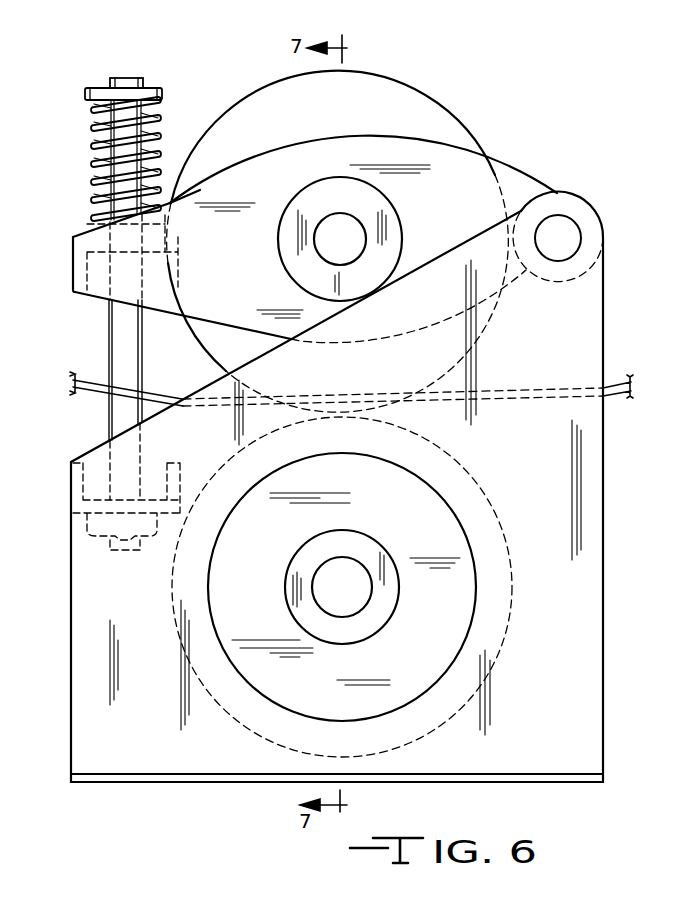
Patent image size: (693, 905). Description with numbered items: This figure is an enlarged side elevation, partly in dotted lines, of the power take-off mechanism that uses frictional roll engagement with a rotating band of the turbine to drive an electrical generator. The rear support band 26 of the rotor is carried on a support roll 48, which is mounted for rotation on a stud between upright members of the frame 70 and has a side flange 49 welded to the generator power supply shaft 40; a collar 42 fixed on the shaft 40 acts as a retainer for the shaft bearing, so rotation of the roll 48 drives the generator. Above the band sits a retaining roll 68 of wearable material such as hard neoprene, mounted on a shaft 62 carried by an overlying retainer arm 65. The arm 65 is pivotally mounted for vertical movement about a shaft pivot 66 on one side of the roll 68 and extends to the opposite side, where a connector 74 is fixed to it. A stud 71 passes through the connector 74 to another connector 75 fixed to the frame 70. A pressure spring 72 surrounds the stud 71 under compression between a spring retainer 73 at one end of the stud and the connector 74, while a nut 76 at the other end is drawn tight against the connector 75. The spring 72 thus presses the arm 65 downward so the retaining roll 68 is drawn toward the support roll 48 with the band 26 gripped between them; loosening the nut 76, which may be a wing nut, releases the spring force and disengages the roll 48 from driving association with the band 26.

The support band 26 is at (618, 382).
The shaft 40 is at (357, 561).
The collar 42 is at (383, 628).
The support roll 48 is at (447, 466).
The side flange 49 is at (465, 586).
The shaft 62 is at (403, 233).
The retainer arm 65 is at (452, 183).
The shaft pivot 66 is at (580, 233).
The retaining roll 68 is at (410, 98).
The frame 70 is at (605, 430).
The stud 71 is at (172, 143).
The pressure spring 72 is at (161, 130).
The spring retainer 73 is at (147, 90).
The connector 74 is at (127, 245).
The connector 75 is at (73, 477).
The nut 76 is at (87, 533).